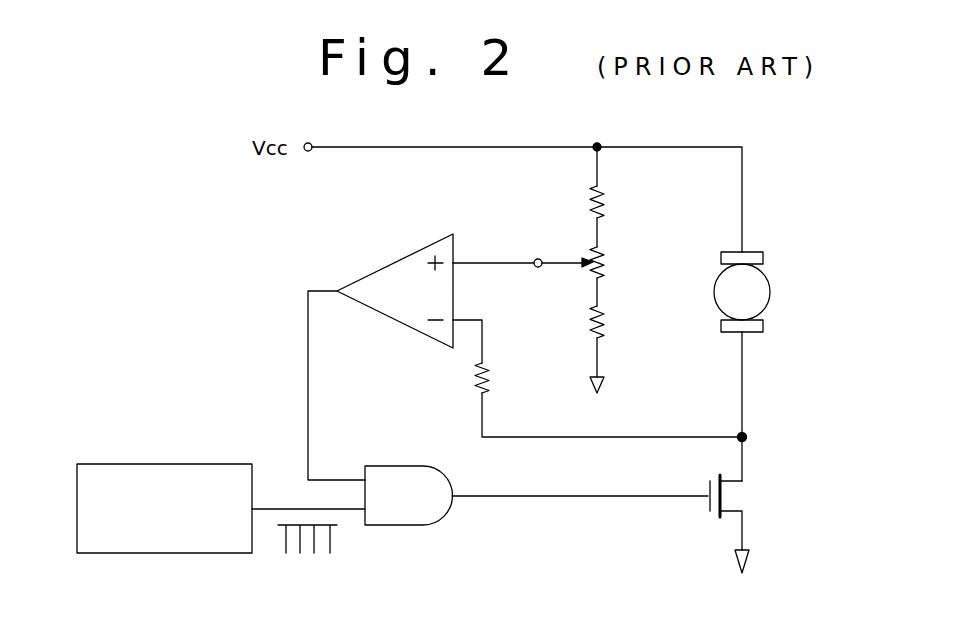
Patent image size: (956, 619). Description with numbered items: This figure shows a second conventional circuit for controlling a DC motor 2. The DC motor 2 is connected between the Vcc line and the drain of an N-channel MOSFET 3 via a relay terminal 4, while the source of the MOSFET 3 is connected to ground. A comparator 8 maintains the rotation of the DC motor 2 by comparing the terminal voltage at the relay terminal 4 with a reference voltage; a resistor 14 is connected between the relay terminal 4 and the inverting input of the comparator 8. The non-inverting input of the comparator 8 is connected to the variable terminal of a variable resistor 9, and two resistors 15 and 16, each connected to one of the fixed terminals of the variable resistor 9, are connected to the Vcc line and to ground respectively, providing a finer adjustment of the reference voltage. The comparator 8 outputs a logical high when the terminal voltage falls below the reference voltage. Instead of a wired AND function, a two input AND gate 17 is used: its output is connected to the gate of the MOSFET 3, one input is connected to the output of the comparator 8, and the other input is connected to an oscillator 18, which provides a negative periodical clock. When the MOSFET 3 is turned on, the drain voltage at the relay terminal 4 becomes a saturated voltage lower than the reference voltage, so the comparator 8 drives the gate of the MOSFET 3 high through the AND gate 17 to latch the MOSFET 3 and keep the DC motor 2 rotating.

The DC motor 2 is at (770, 292).
The N-channel MOSFET 3 is at (735, 511).
The relay terminal 4 is at (750, 436).
The comparator 8 is at (369, 274).
The variable resistor 9 is at (606, 265).
The resistor 14 is at (608, 400).
The resistor 15 is at (608, 204).
The resistor 16 is at (607, 324).
The two input AND gate 17 is at (393, 466).
The oscillator 18 is at (158, 464).